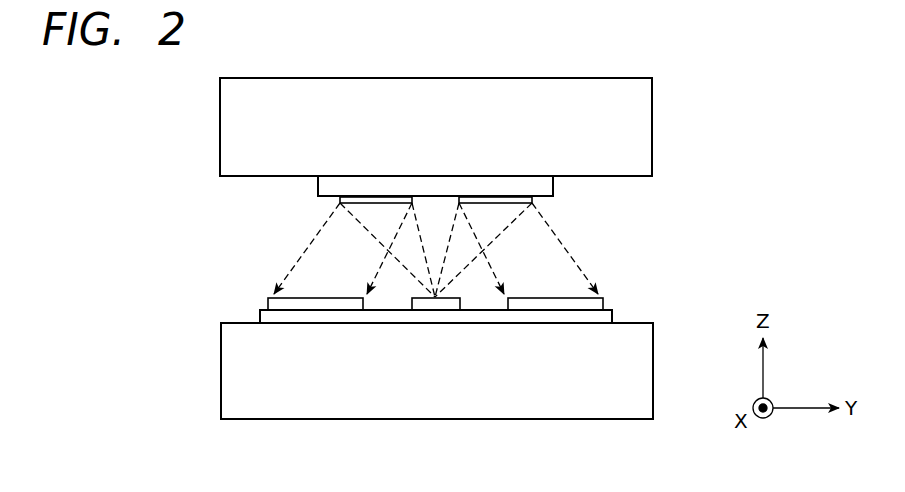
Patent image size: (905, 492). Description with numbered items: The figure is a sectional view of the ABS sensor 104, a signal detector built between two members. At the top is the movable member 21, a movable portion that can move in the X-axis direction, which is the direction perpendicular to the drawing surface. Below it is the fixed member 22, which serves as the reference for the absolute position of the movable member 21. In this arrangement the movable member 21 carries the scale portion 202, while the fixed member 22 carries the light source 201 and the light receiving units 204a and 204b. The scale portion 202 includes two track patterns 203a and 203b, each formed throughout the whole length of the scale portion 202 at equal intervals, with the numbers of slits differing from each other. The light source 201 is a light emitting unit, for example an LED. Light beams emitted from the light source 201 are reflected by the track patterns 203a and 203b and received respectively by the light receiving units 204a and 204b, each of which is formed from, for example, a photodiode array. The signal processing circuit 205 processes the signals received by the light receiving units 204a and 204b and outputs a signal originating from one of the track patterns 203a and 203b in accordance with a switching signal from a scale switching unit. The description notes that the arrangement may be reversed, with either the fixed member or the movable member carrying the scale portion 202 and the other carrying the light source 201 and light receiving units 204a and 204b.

The ABS sensor 104 is at (175, 117).
The movable member 21 is at (650, 126).
The fixed member 22 is at (648, 371).
The light source 201 is at (418, 304).
The scale portion 202 is at (548, 185).
The track pattern 203a is at (533, 204).
The track pattern 203b is at (338, 201).
The light receiving unit 204a is at (604, 301).
The light receiving unit 204b is at (268, 304).
The signal processing circuit 205 is at (612, 318).